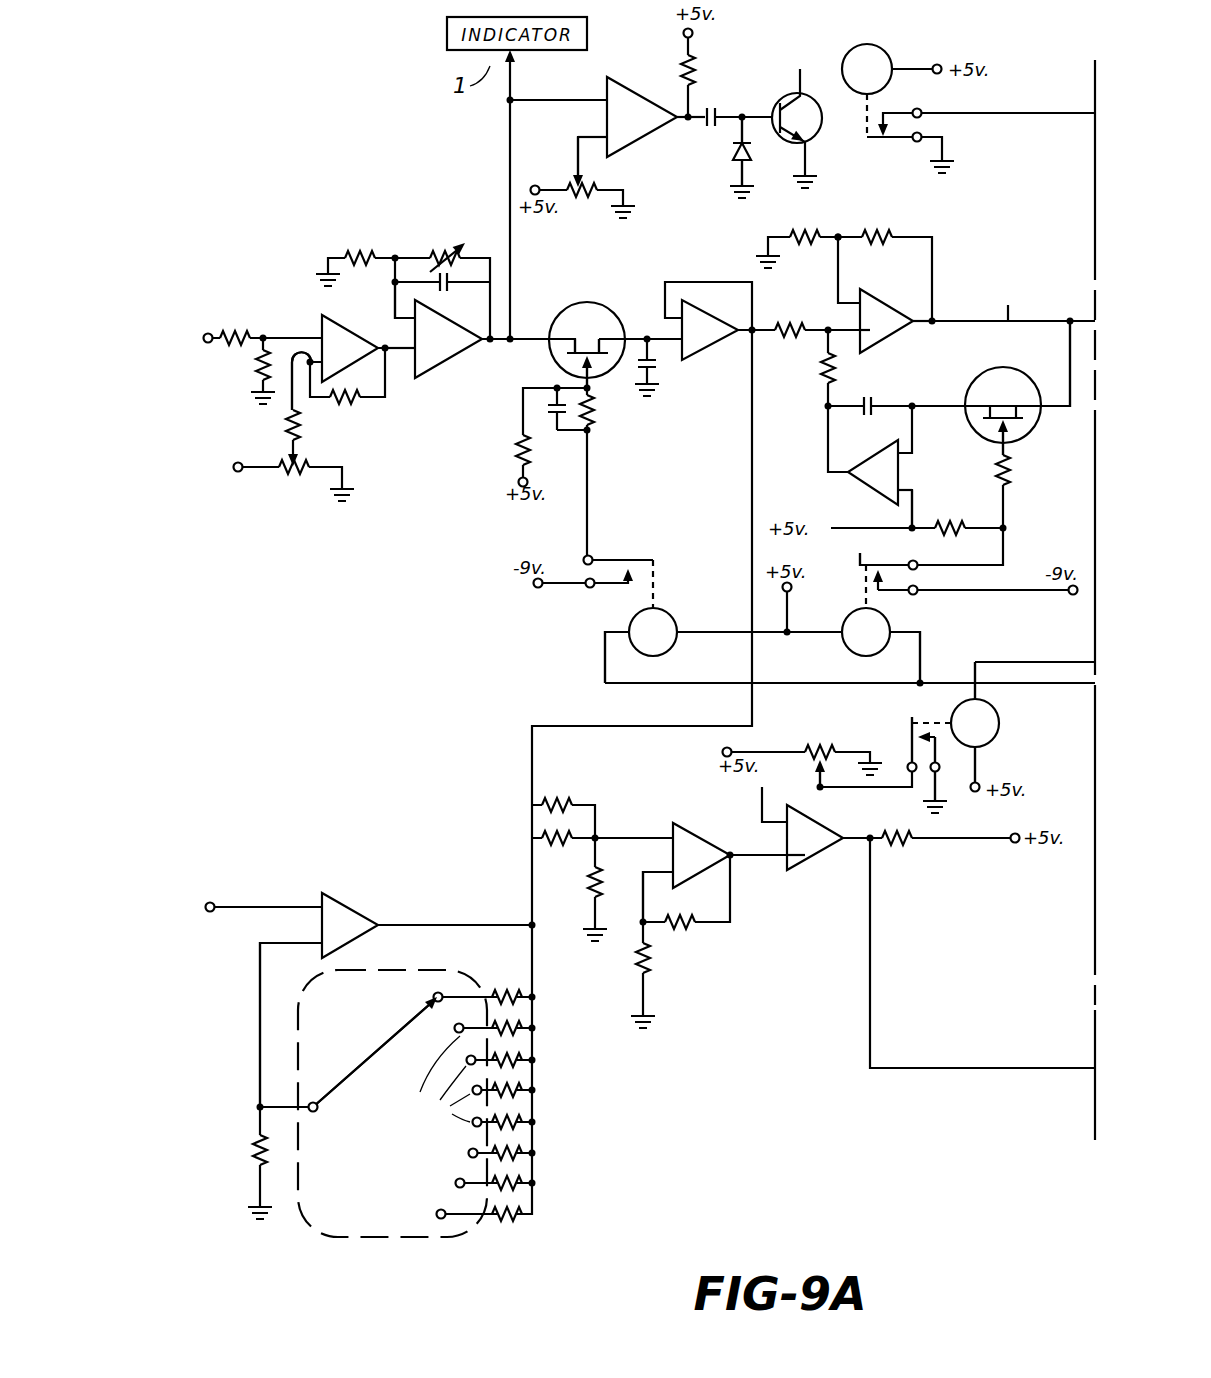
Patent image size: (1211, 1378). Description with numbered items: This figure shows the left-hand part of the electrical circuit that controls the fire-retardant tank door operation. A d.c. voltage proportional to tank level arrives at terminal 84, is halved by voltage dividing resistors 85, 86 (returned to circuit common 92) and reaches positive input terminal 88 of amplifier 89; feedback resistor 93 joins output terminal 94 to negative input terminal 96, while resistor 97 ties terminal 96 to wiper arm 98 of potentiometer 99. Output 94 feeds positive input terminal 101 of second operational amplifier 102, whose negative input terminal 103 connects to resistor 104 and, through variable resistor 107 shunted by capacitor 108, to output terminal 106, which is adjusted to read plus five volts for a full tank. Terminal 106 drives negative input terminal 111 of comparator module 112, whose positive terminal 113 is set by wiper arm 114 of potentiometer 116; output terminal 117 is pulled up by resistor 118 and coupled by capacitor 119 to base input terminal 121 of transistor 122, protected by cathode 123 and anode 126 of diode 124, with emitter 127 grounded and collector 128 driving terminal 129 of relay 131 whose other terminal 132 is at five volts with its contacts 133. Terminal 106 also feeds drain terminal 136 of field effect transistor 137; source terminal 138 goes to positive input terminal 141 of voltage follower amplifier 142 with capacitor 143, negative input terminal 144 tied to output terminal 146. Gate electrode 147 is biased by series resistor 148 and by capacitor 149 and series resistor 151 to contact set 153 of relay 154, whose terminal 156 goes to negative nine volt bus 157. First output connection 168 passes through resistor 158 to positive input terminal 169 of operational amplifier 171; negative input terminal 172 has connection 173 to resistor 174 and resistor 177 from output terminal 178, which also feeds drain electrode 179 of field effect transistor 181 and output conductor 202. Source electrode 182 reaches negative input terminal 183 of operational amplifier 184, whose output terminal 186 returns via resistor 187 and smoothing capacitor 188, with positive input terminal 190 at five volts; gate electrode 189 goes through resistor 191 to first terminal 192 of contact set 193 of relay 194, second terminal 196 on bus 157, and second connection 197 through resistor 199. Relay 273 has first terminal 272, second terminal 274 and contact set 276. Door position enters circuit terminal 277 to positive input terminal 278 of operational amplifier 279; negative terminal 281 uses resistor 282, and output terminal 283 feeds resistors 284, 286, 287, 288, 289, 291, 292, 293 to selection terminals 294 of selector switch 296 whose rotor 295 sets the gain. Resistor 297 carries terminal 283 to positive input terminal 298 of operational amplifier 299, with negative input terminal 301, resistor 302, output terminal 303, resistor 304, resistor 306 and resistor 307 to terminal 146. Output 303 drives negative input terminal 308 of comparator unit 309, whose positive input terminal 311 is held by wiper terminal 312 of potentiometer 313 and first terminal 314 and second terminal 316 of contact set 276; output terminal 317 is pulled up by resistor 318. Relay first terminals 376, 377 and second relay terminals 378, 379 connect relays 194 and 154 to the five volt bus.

The terminal 84 is at (211, 334).
The voltage dividing resistor 85 is at (240, 334).
The voltage dividing resistor 86 is at (260, 372).
The positive input terminal 88 is at (318, 340).
The amplifier 89 is at (345, 340).
The circuit common 92 is at (622, 220).
The feedback resistor 93 is at (352, 402).
The output terminal 94 is at (394, 380).
The negative input terminal 96 is at (285, 380).
The resistor 97 is at (283, 418).
The wiper arm 98 is at (296, 437).
The potentiometer 99 is at (290, 478).
The positive input terminal 101 is at (412, 362).
The second operational amplifier 102 is at (450, 360).
The negative input terminal 103 is at (396, 312).
The resistor 104 is at (358, 250).
The output terminal 106 is at (490, 344).
The variable resistor 107 is at (432, 250).
The capacitor 108 is at (446, 288).
The negative input terminal 111 is at (600, 94).
The comparator module 112 is at (650, 94).
The positive terminal 113 is at (600, 134).
The wiper arm 114 is at (576, 158).
The potentiometer 116 is at (577, 202).
The output terminal 117 is at (686, 122).
The resistor 118 is at (697, 68).
The capacitor 119 is at (712, 108).
The base input terminal 121 is at (768, 110).
The transistor 122 is at (810, 114).
The cathode 123 is at (735, 152).
The diode 124 is at (750, 152).
The anode 126 is at (740, 176).
The emitter 127 is at (812, 140).
The collector 128 is at (788, 96).
The terminal 129 is at (846, 62).
The relay 131 is at (885, 58).
The terminal 132 is at (904, 68).
The relay switch 133 is at (888, 114).
The drain terminal 136 is at (550, 332).
The field effect transistor 137 is at (590, 308).
The source terminal 138 is at (610, 340).
The positive input terminal 141 is at (660, 362).
The operational amplifier 142 is at (700, 342).
The capacitor 143 is at (670, 360).
The negative input terminal 144 is at (683, 302).
The output terminal 146 is at (756, 336).
The gate electrode 147 is at (592, 384).
The series resistor 148 is at (518, 448).
The capacitor 149 is at (554, 420).
The series resistor 151 is at (594, 422).
The contact set 153 is at (660, 574).
The relay 154 is at (670, 624).
The terminal 156 is at (616, 592).
The negative nine volt bus 157 is at (536, 590).
The resistor 158 is at (790, 324).
The first output connection 168 is at (836, 320).
The positive input terminal 169 is at (862, 340).
The operational amplifier 171 is at (895, 330).
The negative input terminal 172 is at (860, 292).
The connection 173 is at (842, 234).
The resistor 174 is at (808, 232).
The resistor 177 is at (886, 234).
The output terminal 178 is at (920, 324).
The drain electrode 179 is at (1042, 412).
The field effect transistor 181 is at (1010, 372).
The source electrode 182 is at (968, 412).
The negative input terminal 183 is at (904, 446).
The operational amplifier 184 is at (876, 488).
The output terminal 186 is at (843, 470).
The resistor 187 is at (820, 376).
The smoothing capacitor 188 is at (870, 400).
The gate electrode 189 is at (1000, 452).
The positive input terminal 190 is at (906, 490).
The resistor 191 is at (1012, 470).
The first terminal 192 is at (912, 562).
The contact set 193 is at (872, 576).
The relay 194 is at (850, 640).
The second terminal 196 is at (916, 590).
The second connection 197 is at (862, 560).
The resistor 199 is at (950, 534).
The output conductor 202 is at (1008, 310).
The first terminal 272 is at (975, 674).
The relay 273 is at (998, 718).
The second terminal 274 is at (978, 768).
The contact set 276 is at (924, 780).
The circuit terminal 277 is at (214, 904).
The positive input terminal 278 is at (318, 896).
The operational amplifier 279 is at (352, 904).
The negative terminal 281 is at (320, 948).
The resistor 282 is at (284, 1160).
The output terminal 283 is at (388, 928).
The resistor 284 is at (536, 992).
The resistor 286 is at (536, 1024).
The resistor 287 is at (536, 1056).
The resistor 288 is at (536, 1086).
The resistor 289 is at (536, 1118).
The resistor 291 is at (536, 1150).
The resistor 292 is at (536, 1180).
The resistor 293 is at (536, 1212).
The selection terminals 294 is at (440, 1079).
The rotor 295 is at (378, 1054).
The selector switch 296 is at (408, 1238).
The resistor 297 is at (570, 844).
The positive input terminal 298 is at (662, 824).
The operational amplifier 299 is at (707, 845).
The negative input terminal 301 is at (664, 870).
The resistor 302 is at (652, 958).
The output terminal 303 is at (697, 868).
The resistor 304 is at (690, 926).
The resistor 306 is at (588, 878).
The resistor 307 is at (572, 786).
The negative input terminal 308 is at (782, 864).
The comparator unit 309 is at (836, 856).
The positive input terminal 311 is at (778, 840).
The wiper terminal 312 is at (816, 786).
The potentiometer 313 is at (818, 748).
The first terminal 314 is at (908, 728).
The second terminal 316 is at (931, 732).
The output terminal 317 is at (838, 836).
The resistor 318 is at (896, 848).
The first terminal 376 is at (894, 644).
The first terminal 377 is at (616, 648).
The second relay terminal 378 is at (824, 640).
The second relay terminal 379 is at (680, 642).